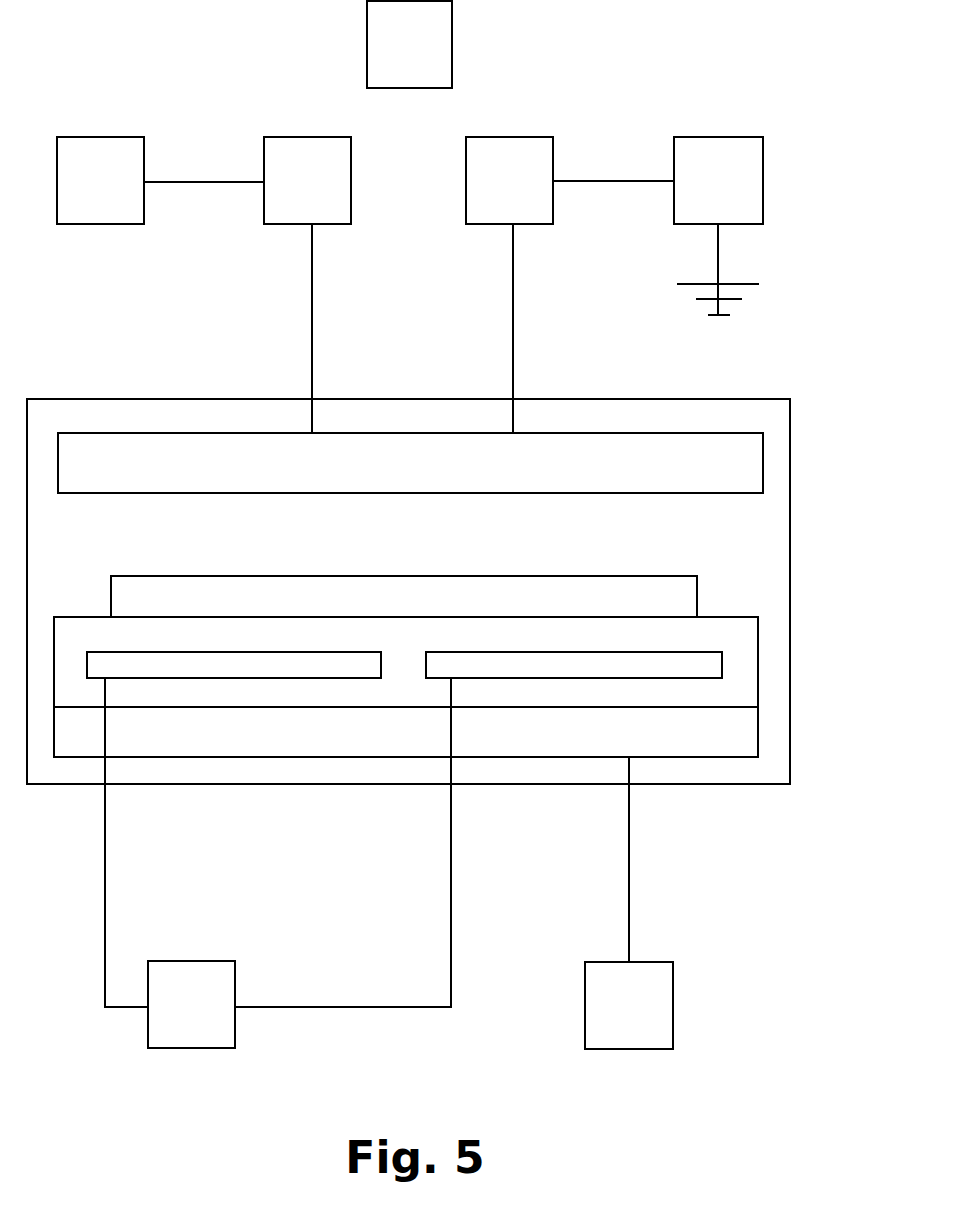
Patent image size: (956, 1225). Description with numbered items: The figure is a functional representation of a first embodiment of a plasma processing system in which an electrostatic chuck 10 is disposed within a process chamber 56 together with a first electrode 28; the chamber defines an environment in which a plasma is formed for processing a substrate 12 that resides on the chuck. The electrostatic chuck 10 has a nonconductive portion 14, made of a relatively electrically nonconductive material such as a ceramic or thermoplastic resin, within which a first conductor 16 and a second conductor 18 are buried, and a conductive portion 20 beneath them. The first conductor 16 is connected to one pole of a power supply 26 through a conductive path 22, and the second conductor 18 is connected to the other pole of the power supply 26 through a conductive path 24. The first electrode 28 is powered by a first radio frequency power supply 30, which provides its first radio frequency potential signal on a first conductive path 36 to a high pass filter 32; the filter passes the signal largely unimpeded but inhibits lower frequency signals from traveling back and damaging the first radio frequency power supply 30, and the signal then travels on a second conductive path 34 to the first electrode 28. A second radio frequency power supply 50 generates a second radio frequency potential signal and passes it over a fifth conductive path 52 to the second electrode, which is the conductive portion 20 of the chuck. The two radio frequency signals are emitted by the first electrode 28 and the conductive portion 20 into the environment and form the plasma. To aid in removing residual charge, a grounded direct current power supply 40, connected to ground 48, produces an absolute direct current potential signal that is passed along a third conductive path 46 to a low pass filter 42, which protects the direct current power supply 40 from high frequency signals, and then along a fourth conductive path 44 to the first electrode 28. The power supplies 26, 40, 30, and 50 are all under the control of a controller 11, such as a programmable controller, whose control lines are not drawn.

The electrostatic chuck 10 is at (456, 687).
The controller 11 is at (409, 44).
The substrate 12 is at (404, 596).
The nonconductive portion 14 is at (406, 662).
The first conductor 16 is at (234, 665).
The second conductor 18 is at (574, 665).
The conductive portion 20 is at (406, 732).
The conductive path 22 is at (109, 842).
The conductive path 24 is at (343, 842).
The power supply 26 is at (191, 1004).
The first electrode 28 is at (410, 463).
The first radio frequency power supply 30 is at (100, 180).
The high pass filter 32 is at (307, 180).
The second conductive path 34 is at (329, 328).
The first conductive path 36 is at (204, 167).
The direct current power supply 40 is at (718, 180).
The low pass filter 42 is at (509, 180).
The fourth conductive path 44 is at (494, 328).
The third conductive path 46 is at (613, 166).
The ground 48 is at (698, 269).
The second radio frequency power supply 50 is at (629, 1005).
The fifth conductive path 52 is at (646, 859).
The process chamber 56 is at (826, 583).